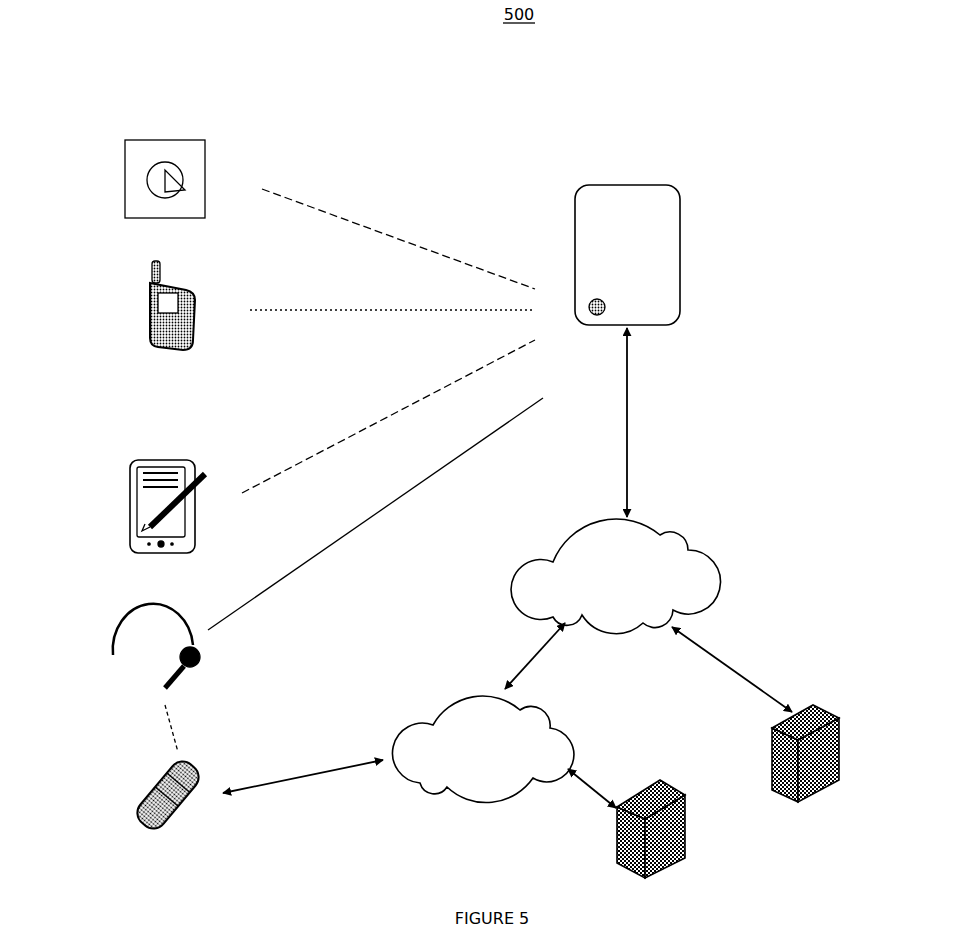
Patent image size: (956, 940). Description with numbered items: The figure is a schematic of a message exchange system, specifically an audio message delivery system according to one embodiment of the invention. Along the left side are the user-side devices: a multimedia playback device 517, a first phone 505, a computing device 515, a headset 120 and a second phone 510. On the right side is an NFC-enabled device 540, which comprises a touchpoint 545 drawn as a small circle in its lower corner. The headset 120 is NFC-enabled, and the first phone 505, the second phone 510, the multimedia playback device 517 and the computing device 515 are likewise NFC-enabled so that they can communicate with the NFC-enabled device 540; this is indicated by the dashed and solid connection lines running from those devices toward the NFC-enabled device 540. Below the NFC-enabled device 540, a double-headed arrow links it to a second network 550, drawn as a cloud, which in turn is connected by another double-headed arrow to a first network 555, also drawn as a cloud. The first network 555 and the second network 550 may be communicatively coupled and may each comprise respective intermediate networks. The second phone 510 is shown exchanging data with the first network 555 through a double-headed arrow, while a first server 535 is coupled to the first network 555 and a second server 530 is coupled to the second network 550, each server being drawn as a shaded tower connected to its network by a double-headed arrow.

The multimedia playback device 517 is at (108, 175).
The first phone 505 is at (116, 303).
The computing device 515 is at (108, 500).
The headset 120 is at (108, 635).
The second phone 510 is at (110, 775).
The NFC-enabled device 540 is at (680, 223).
The touchpoint 545 is at (547, 263).
The second network 550 is at (683, 517).
The first network 555 is at (472, 695).
The second server 530 is at (805, 768).
The first server 535 is at (651, 843).